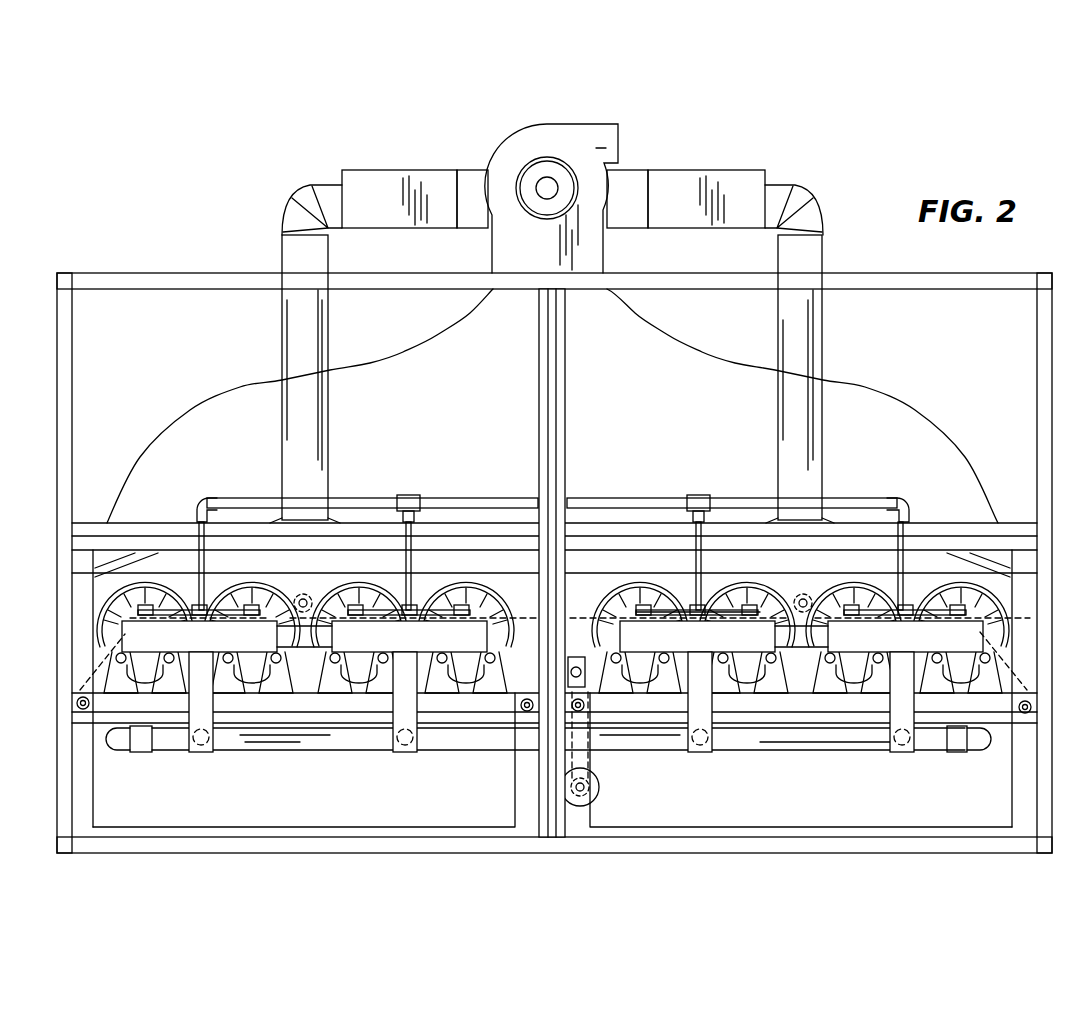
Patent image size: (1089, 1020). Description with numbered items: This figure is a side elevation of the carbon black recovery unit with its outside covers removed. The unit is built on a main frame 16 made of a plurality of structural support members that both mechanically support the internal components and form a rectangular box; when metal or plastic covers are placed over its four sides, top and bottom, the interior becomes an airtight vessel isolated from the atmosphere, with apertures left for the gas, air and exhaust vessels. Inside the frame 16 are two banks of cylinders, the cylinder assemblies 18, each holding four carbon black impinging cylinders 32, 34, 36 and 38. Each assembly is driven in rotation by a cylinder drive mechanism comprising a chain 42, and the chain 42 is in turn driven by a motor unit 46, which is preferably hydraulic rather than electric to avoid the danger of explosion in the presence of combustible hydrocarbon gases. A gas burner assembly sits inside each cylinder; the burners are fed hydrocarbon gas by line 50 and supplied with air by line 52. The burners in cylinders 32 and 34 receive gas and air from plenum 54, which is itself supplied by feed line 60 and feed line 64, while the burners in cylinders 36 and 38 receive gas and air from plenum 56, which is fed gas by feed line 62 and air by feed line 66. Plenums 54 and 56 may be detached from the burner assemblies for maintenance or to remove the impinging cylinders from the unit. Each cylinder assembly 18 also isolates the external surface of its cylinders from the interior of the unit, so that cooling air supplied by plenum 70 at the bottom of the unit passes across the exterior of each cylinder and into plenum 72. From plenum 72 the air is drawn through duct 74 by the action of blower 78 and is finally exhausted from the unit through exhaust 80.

The main frame 16 is at (242, 273).
The cylinder assembly 18 is at (93, 585).
The cylinder 32 is at (640, 592).
The cylinder 34 is at (748, 592).
The cylinder 36 is at (850, 592).
The cylinder 38 is at (960, 585).
The chain 42 is at (608, 638).
The motor unit 46 is at (600, 790).
The line 50 is at (650, 498).
The line 52 is at (800, 745).
The plenum 54 is at (734, 650).
The plenum 56 is at (934, 650).
The feed line 60 is at (710, 600).
The feed line 62 is at (905, 600).
The feed line 64 is at (713, 737).
The feed line 66 is at (893, 737).
The plenum 70 is at (834, 810).
The plenum 72 is at (778, 576).
The duct 74 is at (790, 410).
The blower 78 is at (534, 216).
The exhaust 80 is at (619, 142).